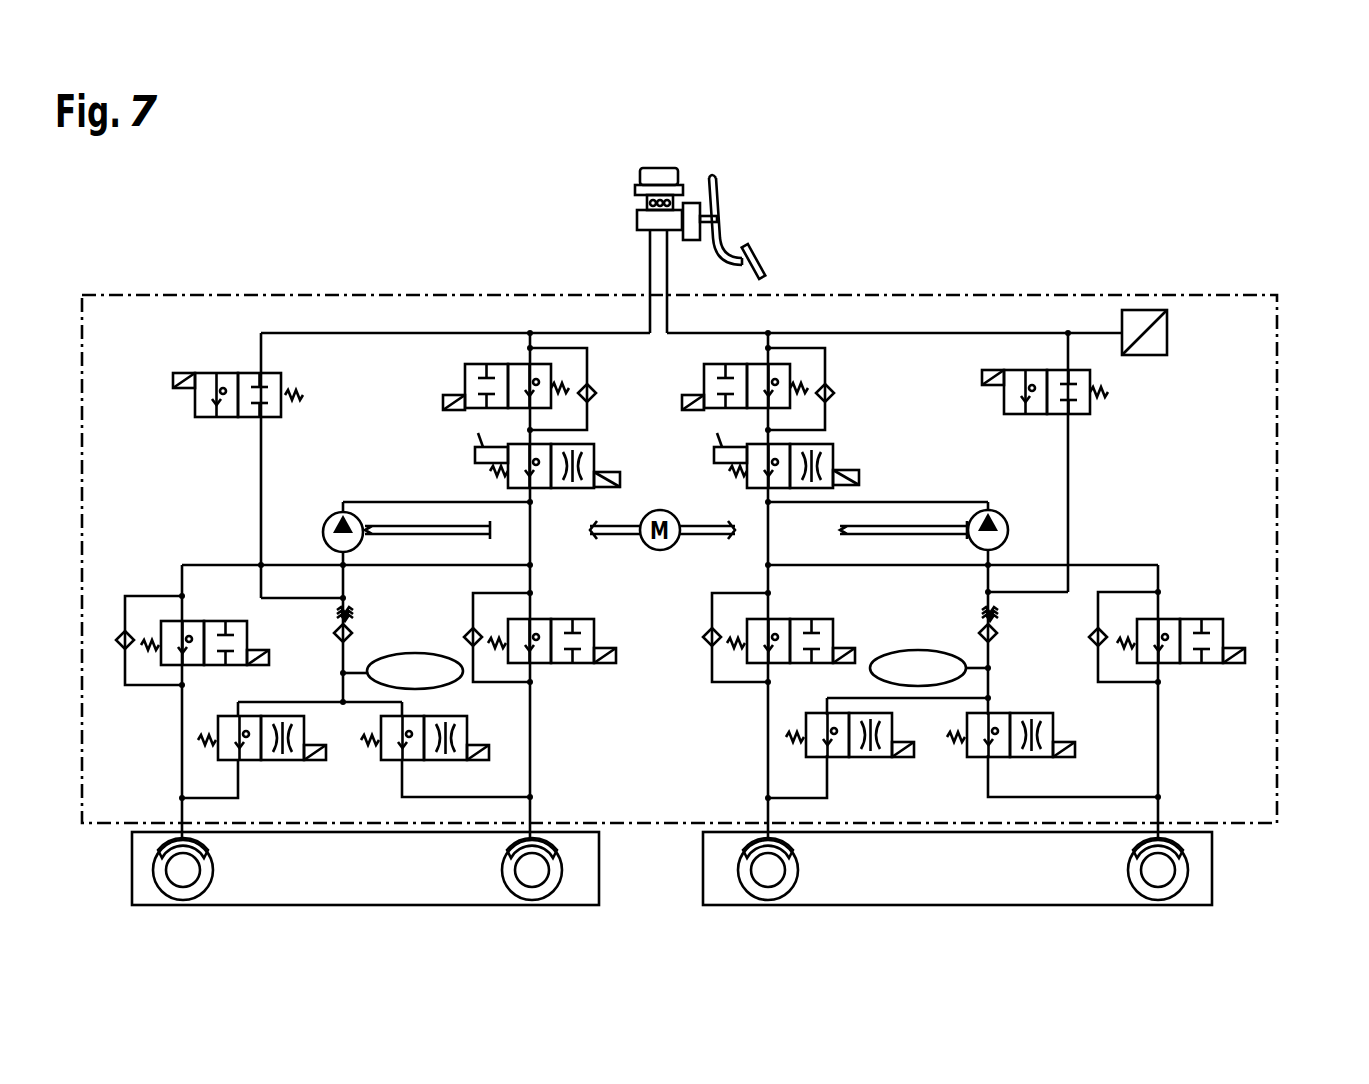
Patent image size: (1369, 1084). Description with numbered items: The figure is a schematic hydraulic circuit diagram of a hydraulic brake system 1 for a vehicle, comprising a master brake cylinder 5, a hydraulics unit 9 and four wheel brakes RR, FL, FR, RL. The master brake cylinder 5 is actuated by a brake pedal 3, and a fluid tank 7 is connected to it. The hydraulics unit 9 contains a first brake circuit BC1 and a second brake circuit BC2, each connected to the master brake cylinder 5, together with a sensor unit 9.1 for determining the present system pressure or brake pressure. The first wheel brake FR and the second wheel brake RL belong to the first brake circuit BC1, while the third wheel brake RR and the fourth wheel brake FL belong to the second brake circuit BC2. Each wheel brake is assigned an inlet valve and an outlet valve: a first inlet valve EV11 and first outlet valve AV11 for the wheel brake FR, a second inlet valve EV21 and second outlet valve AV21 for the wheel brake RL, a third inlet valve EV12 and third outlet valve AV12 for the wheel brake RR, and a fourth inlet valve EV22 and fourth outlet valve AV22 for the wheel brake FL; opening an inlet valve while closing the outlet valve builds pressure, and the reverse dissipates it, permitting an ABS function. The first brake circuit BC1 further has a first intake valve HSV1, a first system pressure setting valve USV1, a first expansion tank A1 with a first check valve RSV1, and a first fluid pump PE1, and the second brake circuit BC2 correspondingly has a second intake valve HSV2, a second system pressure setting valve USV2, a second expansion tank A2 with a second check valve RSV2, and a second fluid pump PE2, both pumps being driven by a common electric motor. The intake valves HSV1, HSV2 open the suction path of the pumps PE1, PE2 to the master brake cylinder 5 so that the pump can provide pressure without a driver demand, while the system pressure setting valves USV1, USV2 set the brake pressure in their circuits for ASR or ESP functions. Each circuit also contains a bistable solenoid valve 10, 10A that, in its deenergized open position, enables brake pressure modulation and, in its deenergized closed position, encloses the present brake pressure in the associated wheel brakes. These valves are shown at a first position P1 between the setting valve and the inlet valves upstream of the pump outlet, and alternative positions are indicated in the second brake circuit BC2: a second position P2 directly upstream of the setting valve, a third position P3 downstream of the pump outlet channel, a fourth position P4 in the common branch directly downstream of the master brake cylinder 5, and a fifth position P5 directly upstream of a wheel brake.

The hydraulic brake system 1 is at (138, 262).
The brake pedal 3 is at (764, 258).
The master brake cylinder 5 is at (636, 222).
The fluid tank 7 is at (638, 178).
The hydraulics unit 9 is at (1280, 334).
The sensor unit 9.1 is at (1163, 333).
The bistable solenoid valve 10 is at (580, 460).
The bistable solenoid valve 10A is at (820, 460).
The first brake circuit BC1 is at (1046, 272).
The second brake circuit BC2 is at (280, 274).
The first position P1 is at (528, 499).
The second position P2 is at (528, 338).
The third position P3 is at (534, 533).
The fourth position P4 is at (648, 256).
The fifth position P5 is at (534, 814).
The first intake valve HSV1 is at (1045, 462).
The second intake valve HSV2 is at (258, 465).
The first system pressure setting valve USV1 is at (796, 389).
The second system pressure setting valve USV2 is at (492, 389).
The first fluid pump PE1 is at (950, 533).
The second fluid pump PE2 is at (381, 533).
The first check valve RSV1 is at (950, 631).
The second check valve RSV2 is at (379, 633).
The first expansion tank A1 is at (930, 668).
The second expansion tank A2 is at (401, 672).
The first inlet valve EV11 is at (779, 634).
The second inlet valve EV21 is at (1167, 702).
The third inlet valve EV12 is at (192, 702).
The fourth inlet valve EV22 is at (540, 634).
The first outlet valve AV11 is at (839, 749).
The second outlet valve AV21 is at (1054, 749).
The third outlet valve AV12 is at (252, 751).
The fourth outlet valve AV22 is at (447, 751).
The third wheel brake RR is at (205, 869).
The fourth wheel brake FL is at (511, 869).
The first wheel brake FR is at (791, 869).
The second wheel brake RL is at (1139, 869).